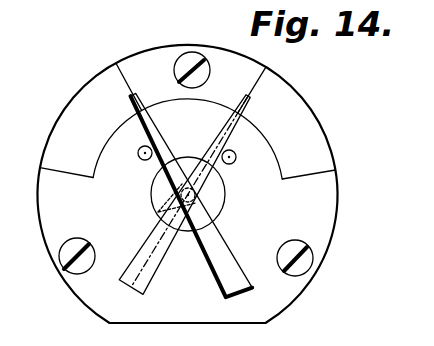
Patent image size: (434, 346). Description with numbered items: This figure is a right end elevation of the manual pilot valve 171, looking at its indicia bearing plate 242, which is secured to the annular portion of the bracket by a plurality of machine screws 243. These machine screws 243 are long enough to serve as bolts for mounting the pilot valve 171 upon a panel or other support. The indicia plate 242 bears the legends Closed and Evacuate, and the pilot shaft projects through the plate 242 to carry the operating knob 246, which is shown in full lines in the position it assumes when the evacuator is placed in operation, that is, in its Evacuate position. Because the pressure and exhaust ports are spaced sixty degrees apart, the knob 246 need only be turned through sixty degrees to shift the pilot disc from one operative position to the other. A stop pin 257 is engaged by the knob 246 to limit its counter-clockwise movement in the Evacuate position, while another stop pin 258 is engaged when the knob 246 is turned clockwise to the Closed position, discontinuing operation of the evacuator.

The pilot valve 171 is at (331, 127).
The indicia bearing plate 242 is at (157, 205).
The machine screws 243 is at (188, 58).
The operating knob 246 is at (153, 132).
The stop pin 257 is at (141, 158).
The stop pin 258 is at (233, 162).